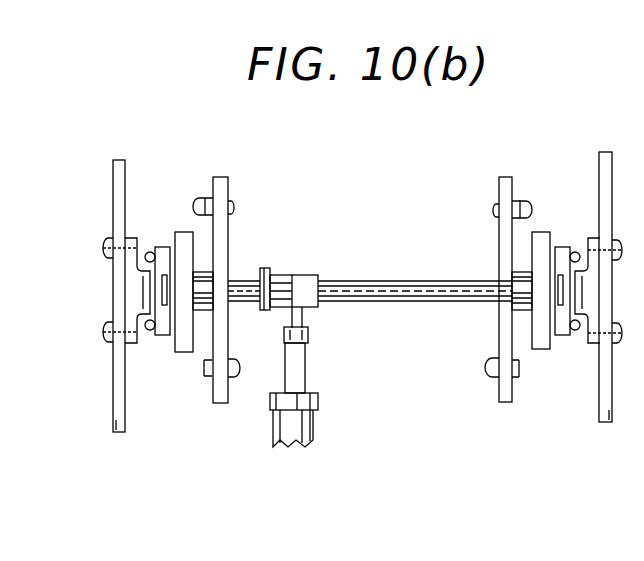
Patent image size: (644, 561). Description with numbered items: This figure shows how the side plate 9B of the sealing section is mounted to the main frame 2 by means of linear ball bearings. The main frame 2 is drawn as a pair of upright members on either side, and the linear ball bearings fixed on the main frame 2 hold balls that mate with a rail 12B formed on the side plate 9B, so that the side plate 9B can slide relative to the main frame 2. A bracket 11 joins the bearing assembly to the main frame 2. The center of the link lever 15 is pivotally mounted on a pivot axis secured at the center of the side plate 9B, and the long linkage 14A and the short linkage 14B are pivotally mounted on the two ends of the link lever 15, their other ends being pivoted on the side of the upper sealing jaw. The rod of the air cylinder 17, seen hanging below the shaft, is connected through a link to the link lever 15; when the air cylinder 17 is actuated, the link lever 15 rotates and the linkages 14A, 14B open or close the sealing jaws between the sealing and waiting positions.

The main frame 2 is at (117, 188).
The bracket 11 is at (139, 238).
The rail 12B is at (165, 247).
The side plate 9B is at (182, 347).
The link lever 15 is at (223, 183).
The short linkage 14B is at (212, 205).
The long linkage 14A is at (222, 369).
The air cylinder 17 is at (330, 390).